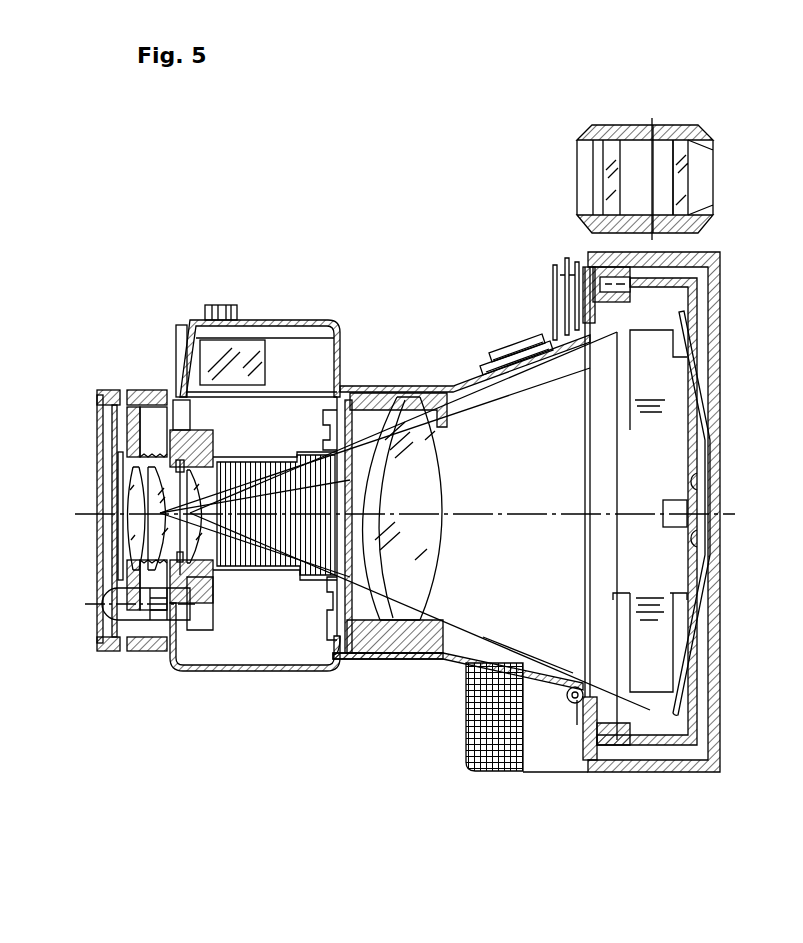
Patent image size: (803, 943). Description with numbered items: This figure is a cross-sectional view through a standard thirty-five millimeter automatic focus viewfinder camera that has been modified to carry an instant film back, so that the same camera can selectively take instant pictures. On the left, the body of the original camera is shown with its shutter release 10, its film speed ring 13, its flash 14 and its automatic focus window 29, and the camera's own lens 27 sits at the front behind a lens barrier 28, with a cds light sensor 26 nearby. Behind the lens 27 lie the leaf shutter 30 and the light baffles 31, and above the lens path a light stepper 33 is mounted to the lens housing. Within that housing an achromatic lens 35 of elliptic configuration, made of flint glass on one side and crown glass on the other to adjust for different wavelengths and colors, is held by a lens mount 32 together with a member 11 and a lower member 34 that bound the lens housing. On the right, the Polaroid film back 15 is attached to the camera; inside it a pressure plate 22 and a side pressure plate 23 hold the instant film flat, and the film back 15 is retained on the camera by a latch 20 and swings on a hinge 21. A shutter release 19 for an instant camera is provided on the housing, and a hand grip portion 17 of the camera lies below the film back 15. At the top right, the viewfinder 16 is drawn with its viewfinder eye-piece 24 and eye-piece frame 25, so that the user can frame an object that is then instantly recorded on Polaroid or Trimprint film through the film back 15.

The shutter release 10 is at (222, 305).
The lens board 11 is at (340, 658).
The film speed ring 13 is at (155, 388).
The flash 14 is at (182, 325).
The Polaroid film back 15 is at (720, 332).
The viewfinder 16 is at (640, 124).
The hand grip portion 17 is at (465, 748).
The shutter release for an instant camera 19 is at (510, 342).
The latch 20 is at (550, 283).
The hinge 21 is at (570, 702).
The pressure plate 22 is at (675, 705).
The side pressure plate 23 is at (613, 547).
The viewfinder eye-piece 24 is at (712, 206).
The eye-piece frame 25 is at (713, 150).
The cds light sensor 26 is at (110, 620).
The lens 27 is at (130, 492).
The lens barrier 28 is at (120, 540).
The automatic focus window 29 is at (297, 350).
The leaf shutter 30 is at (240, 558).
The light baffles 31 is at (250, 458).
The lens mount 32 is at (380, 656).
The light stepper 33 is at (380, 388).
The lower plate 34 is at (460, 630).
The achromatic lens 35 is at (445, 515).